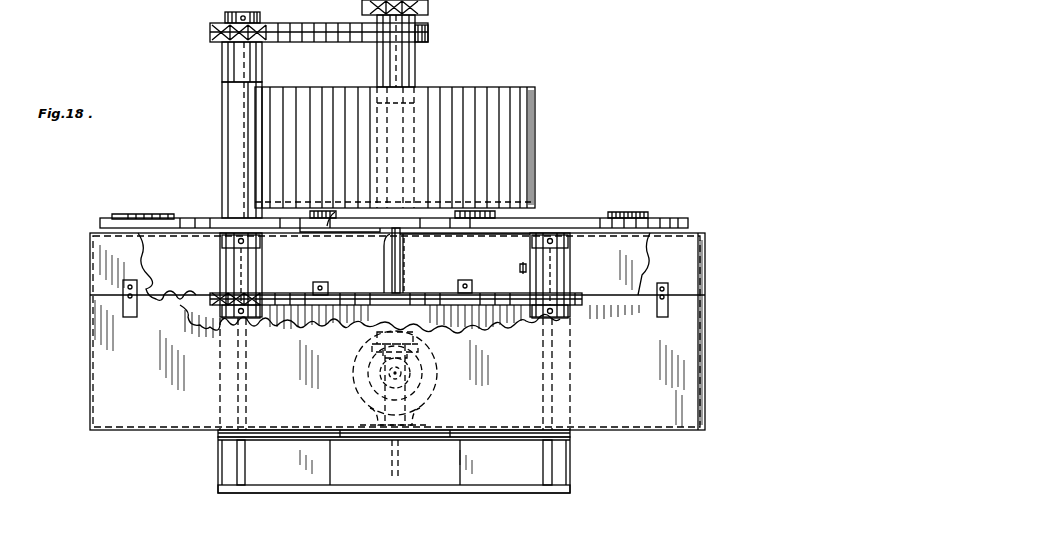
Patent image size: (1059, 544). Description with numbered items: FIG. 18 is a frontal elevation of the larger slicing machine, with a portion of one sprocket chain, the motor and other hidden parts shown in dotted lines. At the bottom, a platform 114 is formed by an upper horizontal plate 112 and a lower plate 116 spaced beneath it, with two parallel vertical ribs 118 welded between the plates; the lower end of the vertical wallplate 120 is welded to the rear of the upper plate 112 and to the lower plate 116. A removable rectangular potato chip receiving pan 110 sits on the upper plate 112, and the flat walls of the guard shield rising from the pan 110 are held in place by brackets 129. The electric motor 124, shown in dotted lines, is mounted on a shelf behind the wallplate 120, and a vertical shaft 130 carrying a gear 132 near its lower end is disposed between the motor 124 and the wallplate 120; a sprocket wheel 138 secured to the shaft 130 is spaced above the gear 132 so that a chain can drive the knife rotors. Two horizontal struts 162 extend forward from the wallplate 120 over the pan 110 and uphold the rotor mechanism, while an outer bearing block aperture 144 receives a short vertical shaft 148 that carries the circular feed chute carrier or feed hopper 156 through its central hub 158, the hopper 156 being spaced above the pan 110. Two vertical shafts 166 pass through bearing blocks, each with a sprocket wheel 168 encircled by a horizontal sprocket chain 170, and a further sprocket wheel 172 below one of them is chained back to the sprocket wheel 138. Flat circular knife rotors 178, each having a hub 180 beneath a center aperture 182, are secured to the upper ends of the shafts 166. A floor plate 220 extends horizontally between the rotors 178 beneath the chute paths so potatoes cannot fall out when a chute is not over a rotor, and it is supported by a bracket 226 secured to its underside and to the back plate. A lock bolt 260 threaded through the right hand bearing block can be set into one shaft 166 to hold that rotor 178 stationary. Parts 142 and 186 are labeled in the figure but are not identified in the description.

The potato chip receiving pan 110 is at (90, 400).
The upper horizontal plate 112 is at (255, 434).
The platform 114 is at (202, 479).
The lower plate 116 is at (325, 490).
The vertical ribs 118 is at (237, 457).
The wallplate 120 is at (410, 466).
The electric motor 124 is at (437, 373).
The brackets 129 is at (706, 322).
The vertical shaft 130 is at (388, 280).
The gear 132 is at (418, 337).
The sprocket wheel 138 is at (428, 34).
The column 142 is at (222, 76).
The outer bearing block aperture 144 is at (222, 52).
The short vertical shaft 148 is at (392, 124).
The feed chute carrier or feed hopper 156 is at (535, 126).
The hub 158 is at (382, 160).
The struts 162 is at (220, 266).
The vertical shafts 166 is at (222, 281).
The sprocket wheel 168 is at (264, 293).
The sprocket chain 170 is at (427, 293).
The further sprocket wheel 172 is at (370, 22).
The knife rotors 178 is at (100, 221).
The hub 180 is at (222, 242).
The center aperture 182 is at (232, 214).
The pad 186 is at (628, 214).
The floor plate 220 is at (353, 213).
The bracket 226 is at (400, 252).
The lock bolt 260 is at (522, 266).